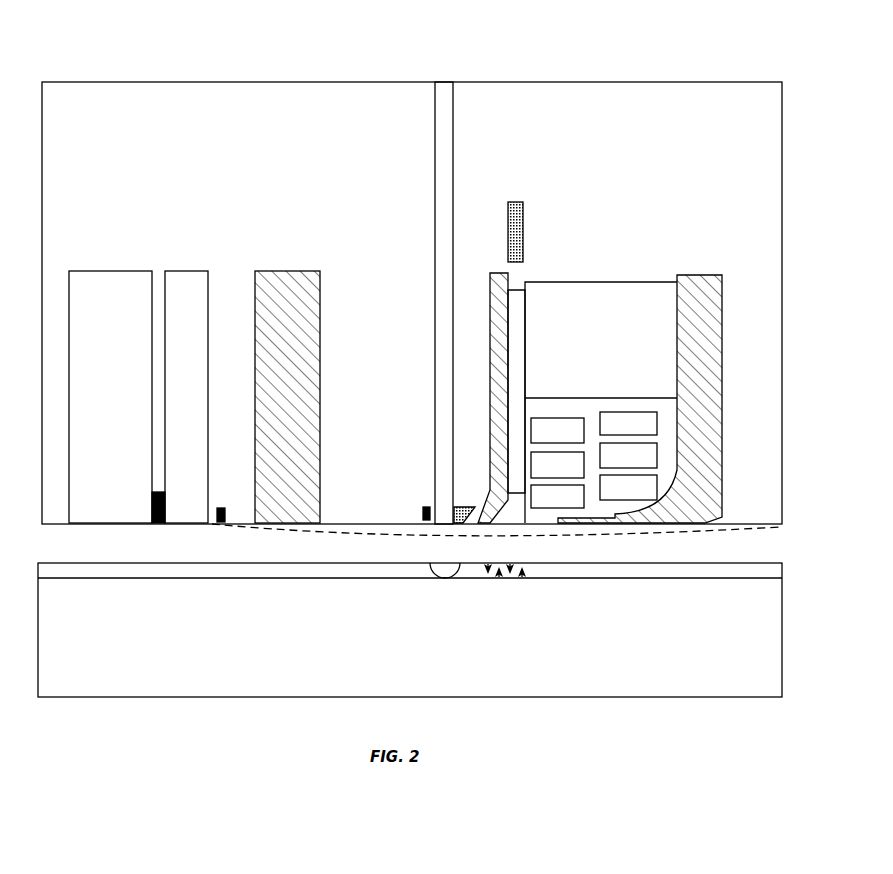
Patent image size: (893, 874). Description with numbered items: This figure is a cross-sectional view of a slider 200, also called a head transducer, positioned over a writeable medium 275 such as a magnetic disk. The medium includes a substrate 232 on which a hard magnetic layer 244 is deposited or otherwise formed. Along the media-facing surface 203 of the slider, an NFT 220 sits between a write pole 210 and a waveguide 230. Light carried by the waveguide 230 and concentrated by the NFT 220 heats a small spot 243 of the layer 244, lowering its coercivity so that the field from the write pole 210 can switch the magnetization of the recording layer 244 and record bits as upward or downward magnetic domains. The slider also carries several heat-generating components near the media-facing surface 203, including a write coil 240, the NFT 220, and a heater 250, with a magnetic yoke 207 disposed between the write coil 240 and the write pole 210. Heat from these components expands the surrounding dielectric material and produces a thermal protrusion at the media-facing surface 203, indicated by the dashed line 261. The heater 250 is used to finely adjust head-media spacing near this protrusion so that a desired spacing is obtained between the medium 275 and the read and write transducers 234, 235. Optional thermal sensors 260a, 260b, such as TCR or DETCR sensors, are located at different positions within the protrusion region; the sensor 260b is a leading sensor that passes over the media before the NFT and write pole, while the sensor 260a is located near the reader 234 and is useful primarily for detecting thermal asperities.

The slider 200 is at (90, 82).
The media-facing surface 203 is at (56, 524).
The magnetic yoke 207 is at (515, 288).
The write pole 210 is at (492, 333).
The NFT 220 is at (472, 505).
The waveguide 230 is at (435, 217).
The substrate 232 is at (410, 630).
The read transducer 234 is at (149, 258).
The write transducer 235 is at (610, 226).
The write coil 240 is at (615, 370).
The spot 243 is at (450, 578).
The hard magnetic layer 244 is at (782, 563).
The heater 250 is at (519, 202).
The thermal sensor 260a is at (218, 506).
The thermal sensor 260b is at (421, 512).
The thermal protrusion 261 is at (690, 534).
The writeable medium 275 is at (195, 712).